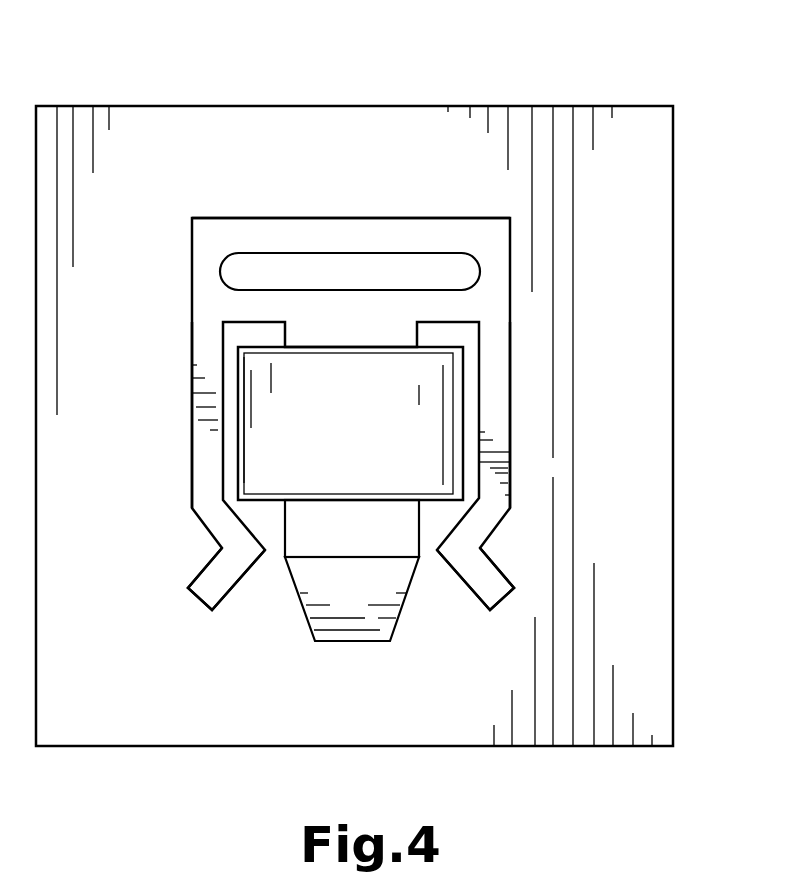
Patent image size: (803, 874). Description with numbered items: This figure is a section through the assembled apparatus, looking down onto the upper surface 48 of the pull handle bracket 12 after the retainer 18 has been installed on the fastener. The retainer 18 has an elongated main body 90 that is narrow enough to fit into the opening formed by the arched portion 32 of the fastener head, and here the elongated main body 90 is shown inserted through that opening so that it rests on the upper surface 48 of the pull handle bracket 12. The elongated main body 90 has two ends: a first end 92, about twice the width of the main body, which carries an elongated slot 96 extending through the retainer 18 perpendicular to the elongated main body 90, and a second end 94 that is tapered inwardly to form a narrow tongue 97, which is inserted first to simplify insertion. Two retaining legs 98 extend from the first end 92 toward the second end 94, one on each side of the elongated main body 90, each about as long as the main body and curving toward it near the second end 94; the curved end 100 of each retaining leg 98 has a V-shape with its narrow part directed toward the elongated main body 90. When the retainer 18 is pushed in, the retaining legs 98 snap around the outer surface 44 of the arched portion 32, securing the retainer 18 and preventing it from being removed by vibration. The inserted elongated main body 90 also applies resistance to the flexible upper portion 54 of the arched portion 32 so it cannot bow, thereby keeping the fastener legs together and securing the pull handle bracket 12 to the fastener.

The pull handle bracket 12 is at (214, 160).
The retainer 18 is at (393, 210).
The arched portion 32 is at (423, 466).
The outer surface 44 is at (366, 434).
The upper surface 48 is at (123, 308).
The upper portion 54 is at (277, 480).
The elongated main body 90 is at (358, 551).
The first end 92 is at (342, 217).
The second end 94 is at (352, 642).
The elongated slot 96 is at (430, 267).
The tongue 97 is at (366, 597).
The retaining legs 98 is at (174, 432).
The curved end 100 is at (207, 570).